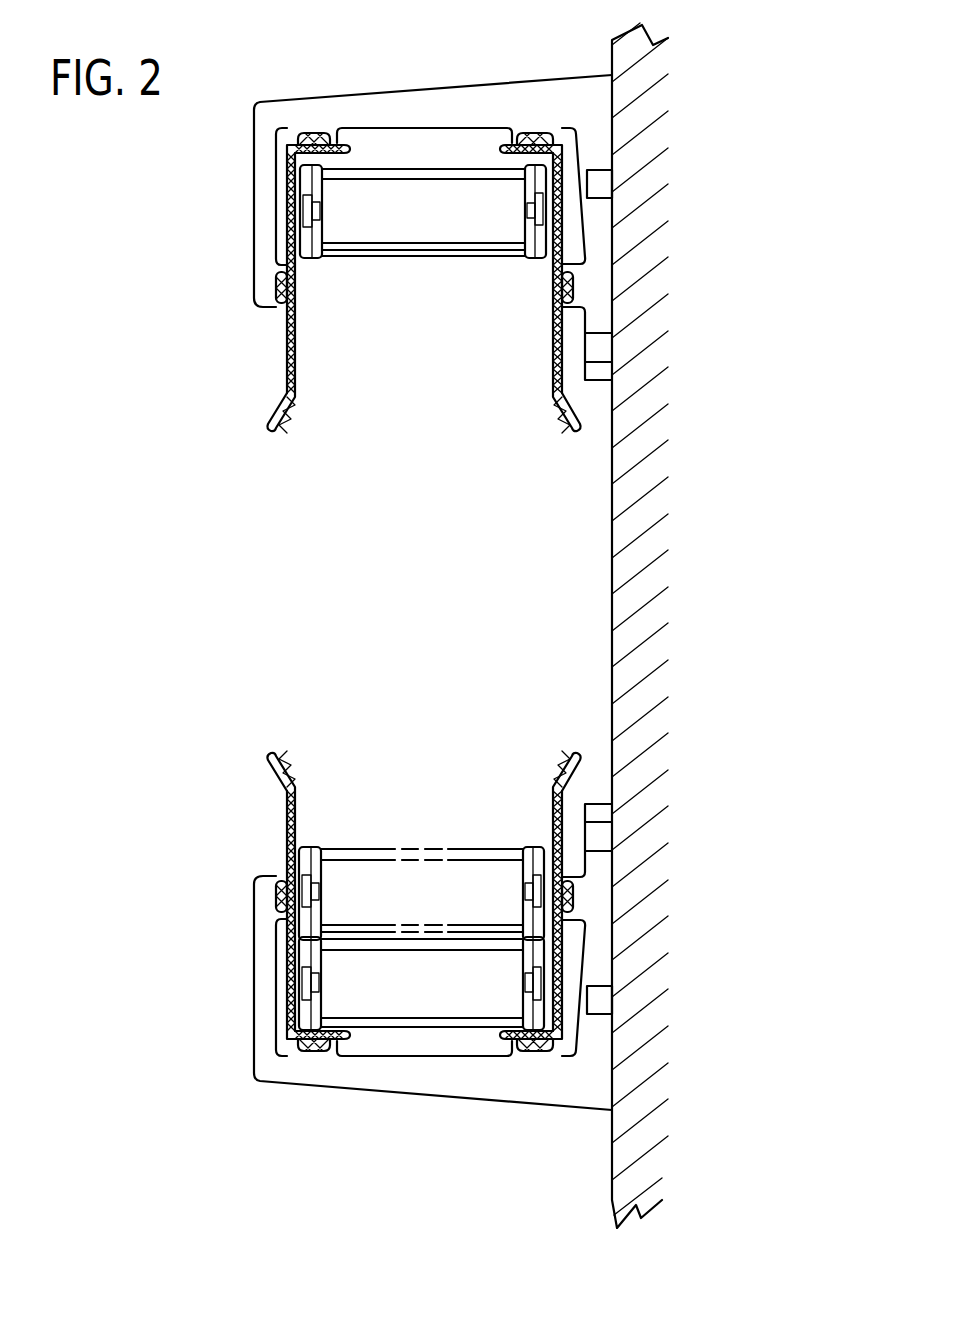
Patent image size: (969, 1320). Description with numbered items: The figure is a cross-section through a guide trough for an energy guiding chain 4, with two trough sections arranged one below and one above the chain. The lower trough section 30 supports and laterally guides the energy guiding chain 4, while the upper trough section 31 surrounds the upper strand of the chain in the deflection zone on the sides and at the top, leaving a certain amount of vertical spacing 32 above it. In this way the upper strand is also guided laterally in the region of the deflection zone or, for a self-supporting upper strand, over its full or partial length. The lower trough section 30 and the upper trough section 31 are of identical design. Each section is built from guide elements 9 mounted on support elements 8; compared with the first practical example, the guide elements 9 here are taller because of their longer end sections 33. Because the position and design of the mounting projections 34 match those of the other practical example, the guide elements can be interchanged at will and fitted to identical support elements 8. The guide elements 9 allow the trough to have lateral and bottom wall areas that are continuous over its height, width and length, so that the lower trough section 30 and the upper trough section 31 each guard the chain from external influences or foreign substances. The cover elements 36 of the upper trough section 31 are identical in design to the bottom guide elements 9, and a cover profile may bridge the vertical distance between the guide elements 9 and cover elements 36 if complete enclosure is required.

The energy guiding chain 4 is at (409, 834).
The support elements 8 is at (260, 198).
The guide elements 9 is at (287, 933).
The lower trough section 30 is at (235, 1019).
The upper trough section 31 is at (232, 165).
The vertical spacing 32 is at (537, 159).
The end sections 33 is at (285, 350).
The mounting projections 34 is at (538, 133).
The cover elements 36 is at (288, 236).